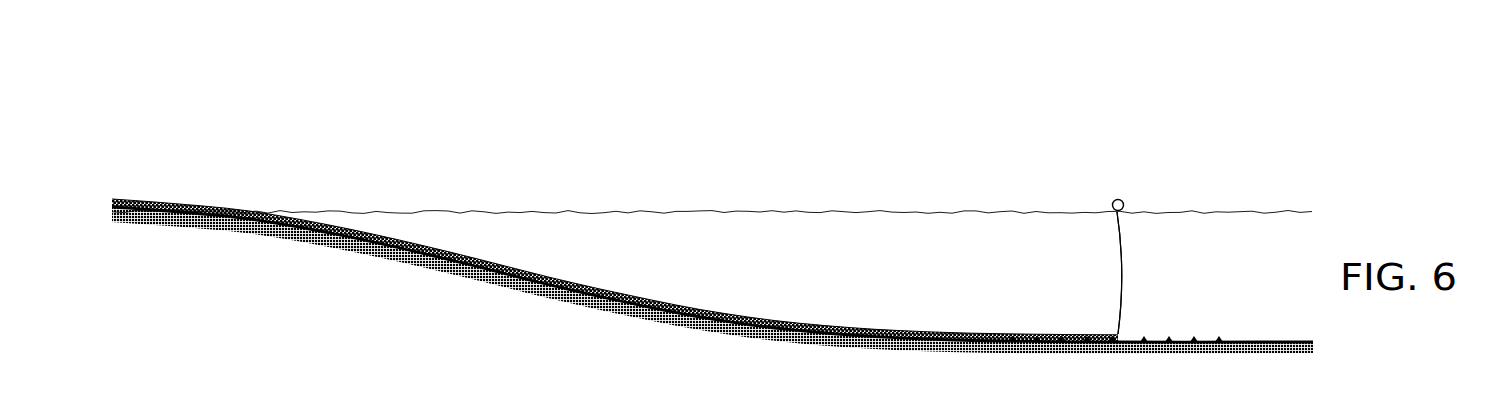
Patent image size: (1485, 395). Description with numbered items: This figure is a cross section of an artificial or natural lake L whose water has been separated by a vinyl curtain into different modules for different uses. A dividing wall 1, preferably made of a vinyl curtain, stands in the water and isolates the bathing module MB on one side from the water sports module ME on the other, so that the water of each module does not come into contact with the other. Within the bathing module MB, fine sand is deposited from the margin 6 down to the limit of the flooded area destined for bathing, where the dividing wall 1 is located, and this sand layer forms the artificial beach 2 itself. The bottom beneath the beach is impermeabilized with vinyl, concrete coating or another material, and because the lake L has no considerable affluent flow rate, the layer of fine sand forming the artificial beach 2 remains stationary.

The margin 6 is at (180, 203).
The artificial beach 2 is at (437, 205).
The dividing wall 1 is at (1103, 267).
The artificial or natural lake L is at (765, 205).
The bathing module MB is at (778, 260).
The water sports module ME is at (1188, 273).